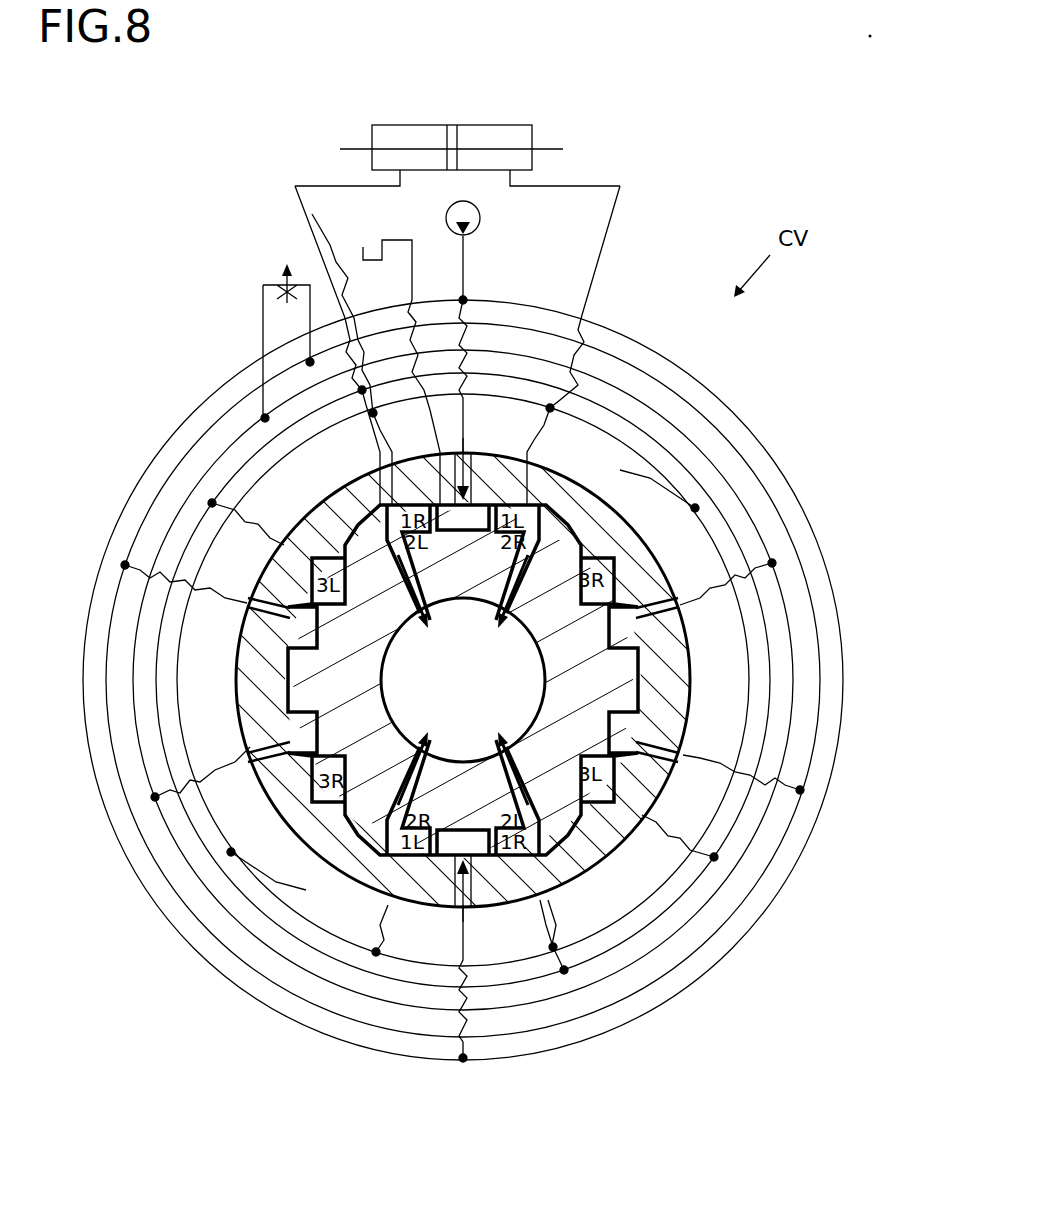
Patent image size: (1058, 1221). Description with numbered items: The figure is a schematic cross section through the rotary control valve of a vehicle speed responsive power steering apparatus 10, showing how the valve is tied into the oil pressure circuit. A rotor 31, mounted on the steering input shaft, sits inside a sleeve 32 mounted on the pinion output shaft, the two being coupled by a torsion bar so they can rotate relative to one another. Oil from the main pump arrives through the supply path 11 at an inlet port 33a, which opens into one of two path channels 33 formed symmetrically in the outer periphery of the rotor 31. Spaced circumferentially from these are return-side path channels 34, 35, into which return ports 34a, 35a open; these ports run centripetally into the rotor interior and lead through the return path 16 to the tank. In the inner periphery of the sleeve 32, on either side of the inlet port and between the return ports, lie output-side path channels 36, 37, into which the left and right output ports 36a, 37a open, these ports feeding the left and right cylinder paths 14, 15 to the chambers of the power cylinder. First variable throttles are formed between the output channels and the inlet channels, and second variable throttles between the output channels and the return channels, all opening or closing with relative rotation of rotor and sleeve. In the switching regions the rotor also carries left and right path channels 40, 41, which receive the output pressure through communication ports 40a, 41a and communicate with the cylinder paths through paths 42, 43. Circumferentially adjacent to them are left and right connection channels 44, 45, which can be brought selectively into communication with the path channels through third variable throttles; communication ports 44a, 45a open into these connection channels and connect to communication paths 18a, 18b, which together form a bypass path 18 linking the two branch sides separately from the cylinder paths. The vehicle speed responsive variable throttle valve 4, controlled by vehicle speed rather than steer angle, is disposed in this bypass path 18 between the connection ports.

The vehicle speed responsive variable throttle valve 4 is at (281, 336).
The vehicle speed responsive power steering apparatus 10 is at (737, 116).
The supply path 11 is at (463, 257).
The left cylinder path 14 is at (312, 214).
The right cylinder path 15 is at (605, 250).
The return path 16 is at (412, 280).
The bypass path 18 is at (250, 328).
The communication path 18a is at (215, 462).
The communication path 18b is at (235, 410).
The rotor 31 is at (615, 510).
The sleeve 32 is at (630, 495).
The path channel 33 is at (470, 525).
The inlet port 33a is at (478, 490).
The path channel 34 is at (372, 520).
The return port 34a is at (392, 588).
The path channel 35 is at (548, 555).
The return port 35a is at (520, 605).
The path channel 36 is at (382, 508).
The left output port 36a is at (395, 500).
The path channel 37 is at (545, 500).
The right output port 37a is at (540, 470).
The left path channel 40 is at (270, 548).
The communication port 40a is at (285, 580).
The right path channel 41 is at (630, 572).
The communication port 41a is at (630, 552).
The path 42 is at (240, 528).
The path 43 is at (730, 520).
The left connection channel 44 is at (312, 630).
The communication port 44a is at (265, 615).
The right connection channel 45 is at (620, 632).
The communication port 45a is at (262, 730).